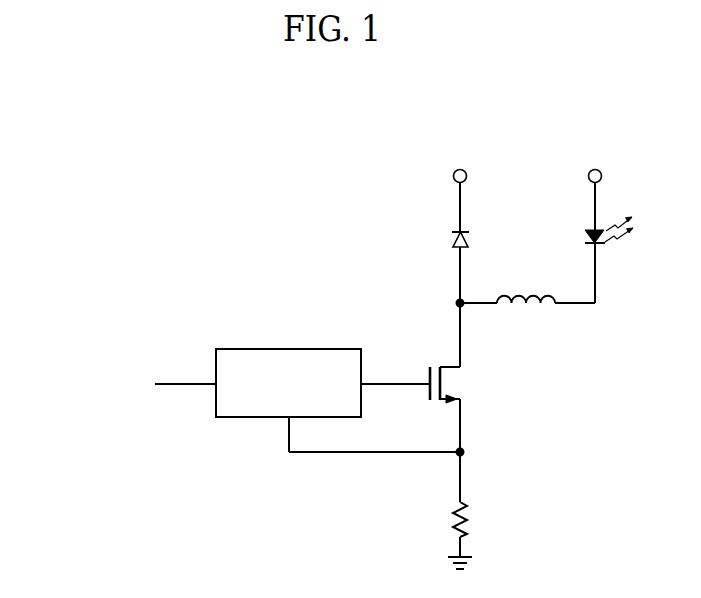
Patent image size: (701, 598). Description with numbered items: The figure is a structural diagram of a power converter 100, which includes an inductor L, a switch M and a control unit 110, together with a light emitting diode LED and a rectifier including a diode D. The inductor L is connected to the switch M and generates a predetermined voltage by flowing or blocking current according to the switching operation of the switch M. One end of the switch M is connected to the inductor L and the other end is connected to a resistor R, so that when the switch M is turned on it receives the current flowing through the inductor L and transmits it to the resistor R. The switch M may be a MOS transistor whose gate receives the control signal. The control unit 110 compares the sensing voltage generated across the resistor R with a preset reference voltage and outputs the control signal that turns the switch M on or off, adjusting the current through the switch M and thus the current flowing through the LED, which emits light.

The power converter 100 is at (79, 146).
The control unit 110 is at (295, 349).
The diode D is at (449, 239).
The light emitting diode LED is at (581, 234).
The inductor L is at (526, 315).
The switch M is at (456, 385).
The resistor R is at (470, 519).